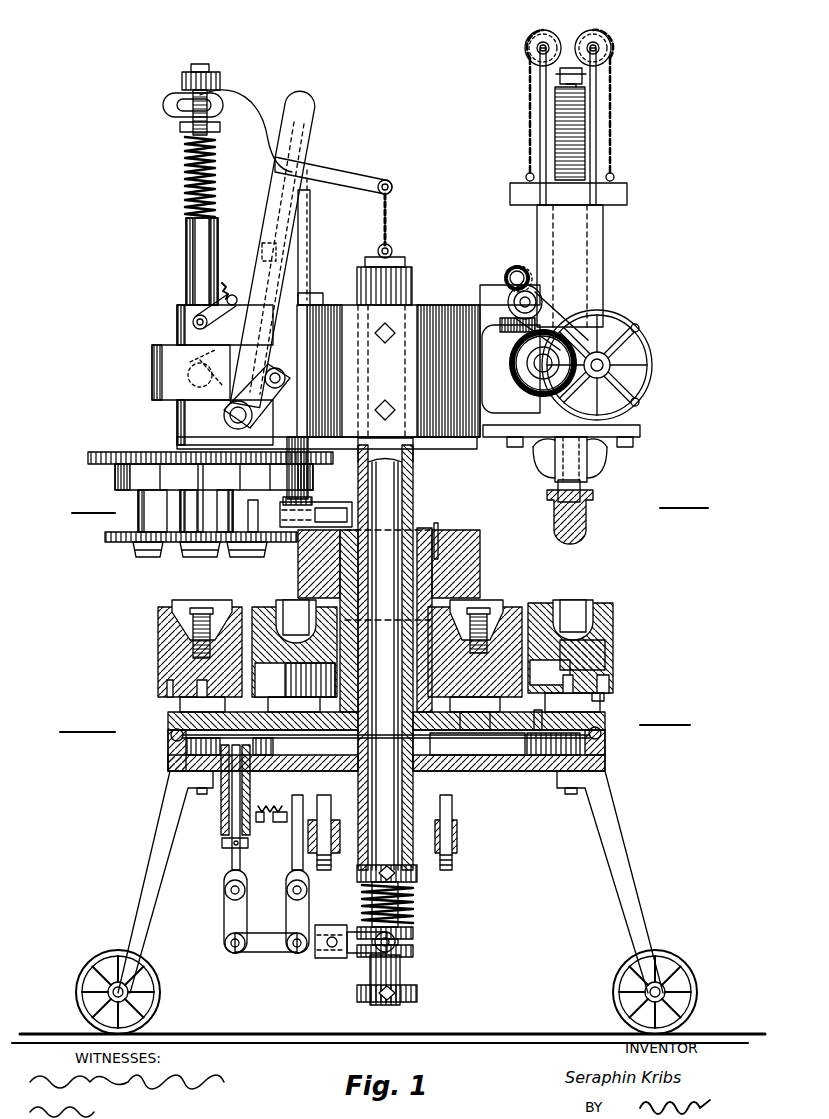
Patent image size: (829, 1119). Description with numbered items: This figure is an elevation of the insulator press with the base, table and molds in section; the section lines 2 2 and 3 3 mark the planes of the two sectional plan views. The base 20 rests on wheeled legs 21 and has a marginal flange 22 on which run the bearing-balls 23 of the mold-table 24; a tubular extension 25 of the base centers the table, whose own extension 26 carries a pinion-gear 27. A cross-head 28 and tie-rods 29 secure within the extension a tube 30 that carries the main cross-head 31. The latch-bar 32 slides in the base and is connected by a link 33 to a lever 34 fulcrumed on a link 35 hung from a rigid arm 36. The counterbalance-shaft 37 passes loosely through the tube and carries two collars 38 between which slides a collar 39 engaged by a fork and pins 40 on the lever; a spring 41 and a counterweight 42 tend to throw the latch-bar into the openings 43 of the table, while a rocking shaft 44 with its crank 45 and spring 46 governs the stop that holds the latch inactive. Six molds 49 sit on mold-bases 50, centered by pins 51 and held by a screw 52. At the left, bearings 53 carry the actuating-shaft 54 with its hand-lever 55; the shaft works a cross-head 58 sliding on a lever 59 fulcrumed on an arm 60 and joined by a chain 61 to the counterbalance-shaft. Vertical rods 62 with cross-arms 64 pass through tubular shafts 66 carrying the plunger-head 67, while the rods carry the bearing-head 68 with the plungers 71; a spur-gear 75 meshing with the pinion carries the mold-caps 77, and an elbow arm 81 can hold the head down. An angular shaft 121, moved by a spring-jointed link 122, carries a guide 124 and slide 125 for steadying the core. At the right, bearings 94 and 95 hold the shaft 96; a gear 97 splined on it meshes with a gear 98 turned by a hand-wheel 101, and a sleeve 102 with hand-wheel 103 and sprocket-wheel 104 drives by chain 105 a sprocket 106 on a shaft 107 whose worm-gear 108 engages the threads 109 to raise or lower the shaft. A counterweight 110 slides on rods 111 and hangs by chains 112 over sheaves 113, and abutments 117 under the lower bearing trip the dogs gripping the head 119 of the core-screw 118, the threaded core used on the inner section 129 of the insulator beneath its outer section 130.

The section line 2 2 is at (375, 511).
The section line 3 3 is at (364, 728).
The base 20 is at (500, 760).
The wheeled legs 21 is at (155, 874).
The marginal flange 22 is at (605, 745).
The bearing-balls 23 is at (607, 722).
The mold-table 24 is at (473, 730).
The tubular extension 25 is at (425, 528).
The table extension 26 is at (438, 522).
The pinion-gear 27 is at (480, 560).
The cross-head 28 is at (457, 850).
The tie-rods 29 is at (338, 848).
The tube 30 is at (362, 797).
The cross-head of the machine 31 is at (432, 303).
The latch-bar 32 is at (227, 812).
The link 33 is at (224, 913).
The lever 34 is at (262, 935).
The link 35 is at (308, 912).
The rigid arm 36 is at (292, 842).
The counterbalance-shaft 37 is at (402, 970).
The collars 38 is at (417, 878).
The collar 39 is at (413, 940).
The fork and pins 40 is at (375, 955).
The spring 41 is at (413, 908).
The counterweight 42 is at (325, 958).
The openings 43 is at (538, 730).
The shaft 44 is at (268, 798).
The crank 45 is at (286, 825).
The spring 46 is at (262, 825).
The molds 49 is at (158, 650).
The mold-bases 50 is at (604, 697).
The pins 51 is at (600, 665).
The screw 52 is at (613, 678).
The bearings 53 is at (177, 323).
The actuating-shaft 54 is at (224, 418).
The hand-lever 55 is at (315, 125).
The cross-head 58 is at (180, 127).
The lever 59 is at (335, 172).
The arm 60 is at (310, 262).
The chain 61 is at (392, 248).
The vertical rods 62 is at (185, 170).
The cross-arms 64 is at (182, 78).
The tubular shafts 66 is at (190, 258).
The plunger-head 67 is at (88, 457).
The bearing-head 68 is at (115, 480).
The plungers 71 is at (138, 510).
The spur-gear 75 is at (110, 543).
The mold-caps or followers 77 is at (140, 558).
The arm 81 is at (152, 370).
The bearing 94 is at (560, 366).
The bearing 95 is at (603, 278).
The shaft 96 is at (585, 452).
The gear 97 is at (535, 385).
The gear 98 is at (516, 370).
The hand-wheel 101 is at (500, 324).
The sleeve 102 is at (620, 350).
The hand-wheel 103 is at (652, 370).
The sprocket-wheel 104 is at (612, 364).
The chain 105 is at (528, 363).
The sprocket 106 is at (517, 267).
The shaft 107 is at (515, 292).
The worm-gear 108 is at (520, 268).
The threads 109 is at (625, 322).
The counterweight 110 is at (627, 195).
The rods 111 is at (540, 125).
The chains 112 is at (528, 150).
The sheaves 113 is at (525, 48).
The abutments 117 is at (540, 447).
The core-screw 118 is at (193, 625).
The head 119 is at (490, 608).
The angular shaft 121 is at (305, 215).
The spring-jointed link 122 is at (262, 250).
The guide 124 is at (330, 502).
The slide 125 is at (240, 540).
The lower or inner section of the insulator 129 is at (158, 670).
The upper or outer section of the insulator 130 is at (288, 604).